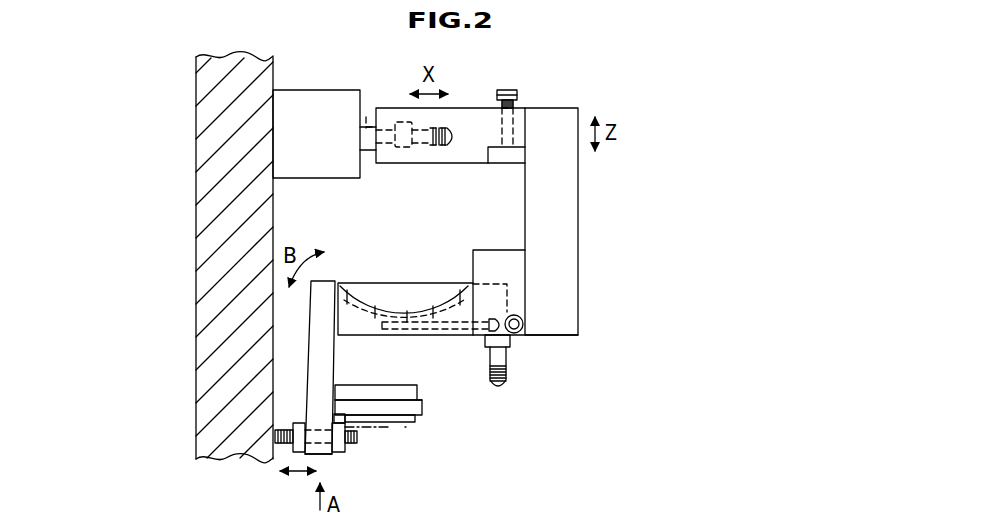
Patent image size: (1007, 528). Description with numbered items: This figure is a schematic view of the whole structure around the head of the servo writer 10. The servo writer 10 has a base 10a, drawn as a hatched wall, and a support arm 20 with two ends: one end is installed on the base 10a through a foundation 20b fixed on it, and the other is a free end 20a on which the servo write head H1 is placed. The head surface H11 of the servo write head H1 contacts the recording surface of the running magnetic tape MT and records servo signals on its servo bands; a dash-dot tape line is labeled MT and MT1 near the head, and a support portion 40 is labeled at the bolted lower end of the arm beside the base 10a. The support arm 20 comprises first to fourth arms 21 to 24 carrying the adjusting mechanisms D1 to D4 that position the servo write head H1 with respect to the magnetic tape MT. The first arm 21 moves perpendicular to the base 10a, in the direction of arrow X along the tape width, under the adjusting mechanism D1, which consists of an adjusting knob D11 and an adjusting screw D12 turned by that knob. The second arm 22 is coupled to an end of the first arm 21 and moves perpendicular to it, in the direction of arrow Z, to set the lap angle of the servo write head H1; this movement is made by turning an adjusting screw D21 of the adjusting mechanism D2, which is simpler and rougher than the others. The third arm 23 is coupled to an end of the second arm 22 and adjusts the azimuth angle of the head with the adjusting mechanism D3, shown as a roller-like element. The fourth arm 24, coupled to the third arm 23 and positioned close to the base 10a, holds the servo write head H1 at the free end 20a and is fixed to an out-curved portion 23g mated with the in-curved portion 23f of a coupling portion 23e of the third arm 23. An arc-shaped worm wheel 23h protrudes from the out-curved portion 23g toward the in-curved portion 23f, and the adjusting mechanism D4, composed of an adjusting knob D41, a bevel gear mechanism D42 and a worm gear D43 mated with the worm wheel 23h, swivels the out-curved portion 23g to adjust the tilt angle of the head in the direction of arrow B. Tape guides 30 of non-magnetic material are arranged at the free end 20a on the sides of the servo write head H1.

The servo writer 10 is at (637, 87).
The base 10a is at (205, 102).
The support arm 20 is at (624, 167).
The free end 20a is at (331, 463).
The foundation 20b is at (303, 92).
The first arm 21 is at (457, 149).
The second arm 22 is at (570, 198).
The third arm 23 is at (361, 279).
The coupling portion 23e is at (455, 259).
The in-curved portion 23f is at (360, 337).
The out-curved portion 23g is at (405, 287).
The worm wheel 23h is at (392, 337).
The fourth arm 24 is at (320, 337).
The tape guide 30 is at (419, 411).
The support portion 40 is at (286, 452).
The adjusting mechanism D1 is at (402, 151).
The adjusting knob D11 is at (444, 120).
The adjusting screw D12 is at (366, 117).
The adjusting mechanism D2 is at (524, 94).
The adjusting screw D21 is at (508, 89).
The adjusting mechanism D3 is at (534, 328).
The adjusting mechanism D4 is at (517, 367).
The adjusting knob D41 is at (498, 390).
The bevel gear mechanism D42 is at (497, 299).
The worm gear D43 is at (447, 336).
The servo write head H1 is at (442, 411).
The head surface H11 is at (409, 422).
The magnetic tape MT is at (383, 430).
The magnetic tape MT1 is at (404, 430).